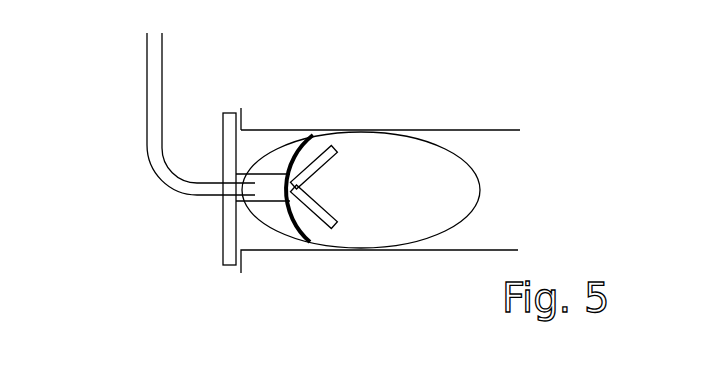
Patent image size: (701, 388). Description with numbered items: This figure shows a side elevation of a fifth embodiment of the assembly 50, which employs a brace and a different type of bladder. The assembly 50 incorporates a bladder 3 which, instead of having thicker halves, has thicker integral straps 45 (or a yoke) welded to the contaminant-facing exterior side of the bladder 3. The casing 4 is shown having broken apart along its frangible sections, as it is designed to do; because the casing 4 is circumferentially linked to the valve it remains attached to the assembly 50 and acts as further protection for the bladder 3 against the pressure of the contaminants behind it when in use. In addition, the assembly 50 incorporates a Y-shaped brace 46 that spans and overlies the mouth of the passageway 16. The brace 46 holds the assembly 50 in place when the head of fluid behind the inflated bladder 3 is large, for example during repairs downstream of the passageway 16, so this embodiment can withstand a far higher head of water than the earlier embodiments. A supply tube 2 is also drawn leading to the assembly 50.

The supply tube 2 is at (147, 82).
The bladder 3 is at (405, 155).
The casing 4 is at (322, 158).
The passageway 16 is at (487, 147).
The integral straps 45 is at (336, 131).
The brace 46 is at (222, 228).
The assembly 50 is at (266, 122).